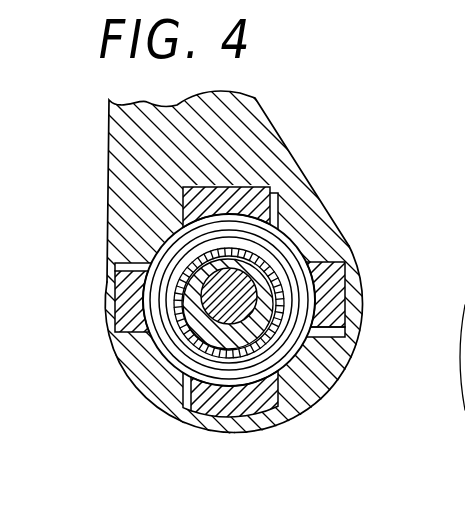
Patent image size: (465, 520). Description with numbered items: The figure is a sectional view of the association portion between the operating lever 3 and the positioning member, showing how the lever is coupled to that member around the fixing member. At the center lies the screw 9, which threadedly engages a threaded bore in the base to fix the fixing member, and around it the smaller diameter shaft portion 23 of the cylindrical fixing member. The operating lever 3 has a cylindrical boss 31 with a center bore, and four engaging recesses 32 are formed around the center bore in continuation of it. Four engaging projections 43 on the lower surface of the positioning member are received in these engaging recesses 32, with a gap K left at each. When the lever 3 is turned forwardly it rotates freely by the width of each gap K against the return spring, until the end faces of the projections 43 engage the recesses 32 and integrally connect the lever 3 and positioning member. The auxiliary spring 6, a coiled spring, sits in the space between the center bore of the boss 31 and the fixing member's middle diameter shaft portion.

The operating lever 3 is at (108, 143).
The cylindrical boss 31 is at (142, 377).
The engaging projections 43 is at (122, 334).
The auxiliary spring 6 is at (282, 378).
The engaging recesses 32 is at (130, 314).
The gap K is at (118, 268).
The smaller diameter shaft portion 23 is at (272, 288).
The screw 9 is at (253, 305).